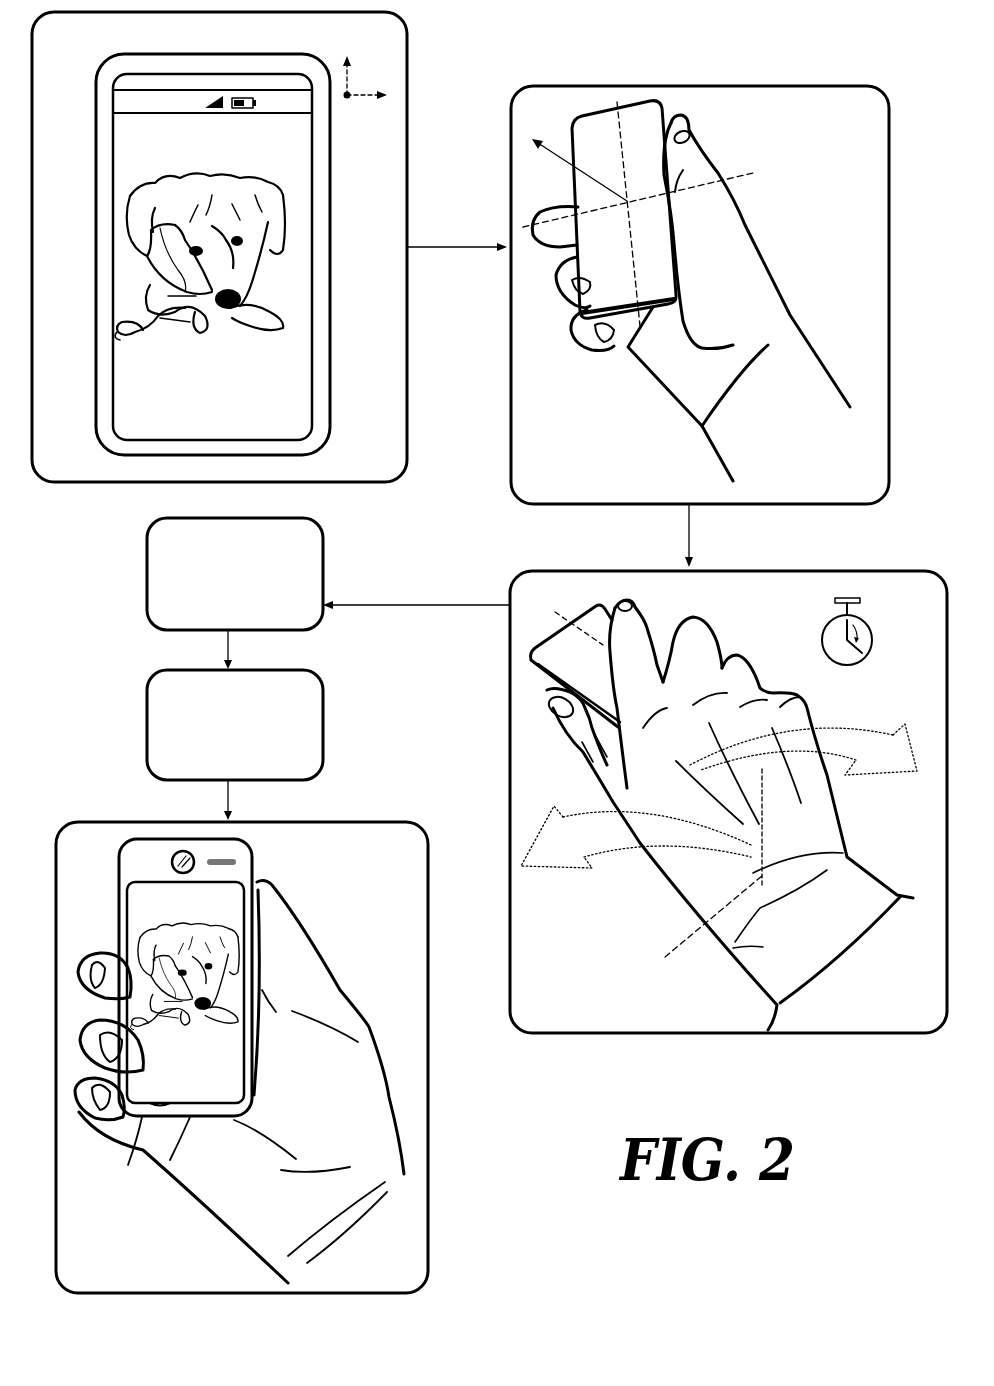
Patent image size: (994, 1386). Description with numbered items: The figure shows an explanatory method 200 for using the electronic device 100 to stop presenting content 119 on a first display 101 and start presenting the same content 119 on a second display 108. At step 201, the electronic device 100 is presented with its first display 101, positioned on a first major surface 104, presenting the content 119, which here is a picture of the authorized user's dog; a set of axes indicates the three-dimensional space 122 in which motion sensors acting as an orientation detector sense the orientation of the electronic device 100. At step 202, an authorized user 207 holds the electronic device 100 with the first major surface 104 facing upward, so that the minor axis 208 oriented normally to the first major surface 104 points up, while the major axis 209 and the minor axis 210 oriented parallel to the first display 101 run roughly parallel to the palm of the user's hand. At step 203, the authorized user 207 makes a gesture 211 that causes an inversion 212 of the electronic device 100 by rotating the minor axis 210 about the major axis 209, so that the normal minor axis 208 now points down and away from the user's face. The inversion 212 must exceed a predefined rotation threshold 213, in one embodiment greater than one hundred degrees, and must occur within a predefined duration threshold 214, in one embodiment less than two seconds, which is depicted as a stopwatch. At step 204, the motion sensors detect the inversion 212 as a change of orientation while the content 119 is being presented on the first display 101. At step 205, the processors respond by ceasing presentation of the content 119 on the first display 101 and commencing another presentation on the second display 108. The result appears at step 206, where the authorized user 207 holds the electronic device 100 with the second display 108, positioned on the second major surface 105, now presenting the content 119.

The electronic device 100 is at (78, 81).
The first display 101 is at (143, 381).
The first major surface 104 is at (322, 364).
The second major surface 105 is at (200, 1112).
The second display 108 is at (161, 1092).
The content 119 is at (122, 202).
The three-dimensional space 122 is at (351, 91).
The method 200 is at (713, 50).
The step 201 is at (407, 119).
The step 202 is at (891, 308).
The step 203 is at (824, 569).
The step 204 is at (147, 573).
The step 205 is at (147, 725).
The step 206 is at (430, 1124).
The authorized user 207 is at (724, 430).
The minor axis oriented normally with the first major surface 208 is at (578, 170).
The major axis 209 is at (632, 259).
The minor axis oriented parallel to the first display 210 is at (741, 177).
The gesture 211 is at (839, 720).
The inversion 212 is at (554, 857).
The predefined rotation threshold 213 is at (750, 852).
The predefined duration threshold 214 is at (862, 636).